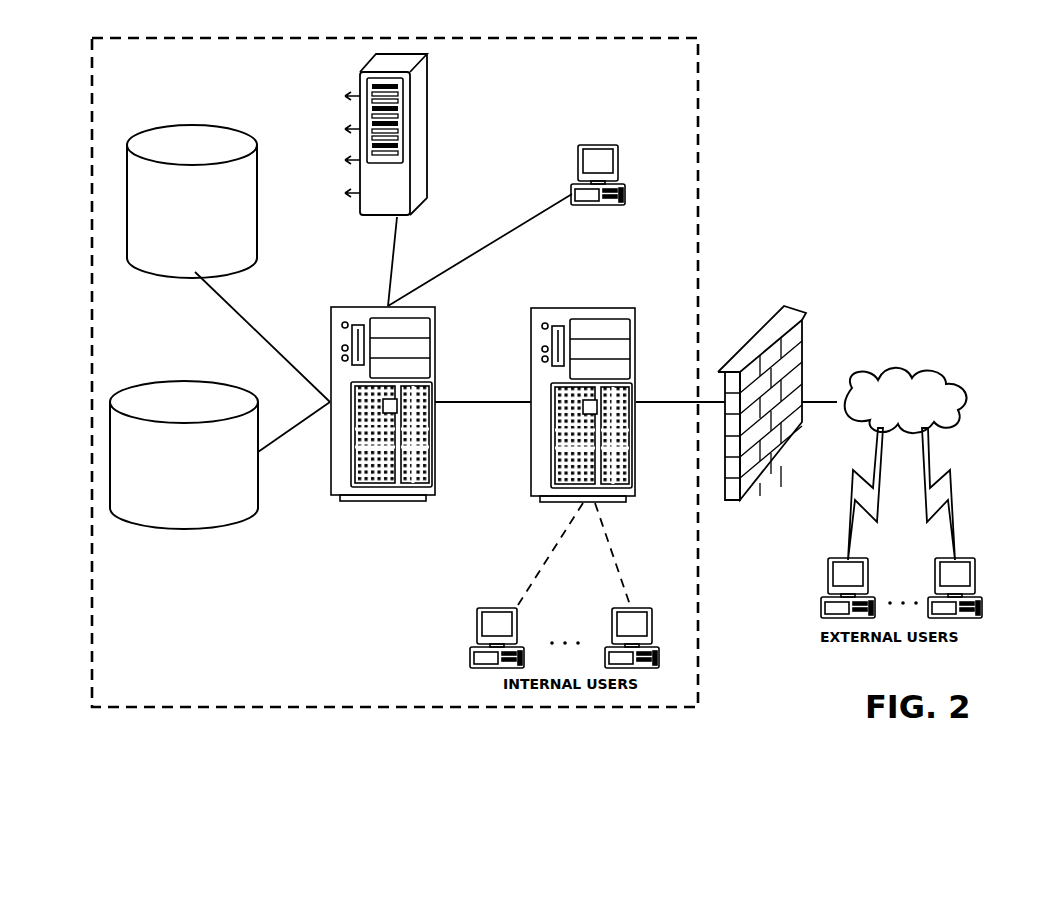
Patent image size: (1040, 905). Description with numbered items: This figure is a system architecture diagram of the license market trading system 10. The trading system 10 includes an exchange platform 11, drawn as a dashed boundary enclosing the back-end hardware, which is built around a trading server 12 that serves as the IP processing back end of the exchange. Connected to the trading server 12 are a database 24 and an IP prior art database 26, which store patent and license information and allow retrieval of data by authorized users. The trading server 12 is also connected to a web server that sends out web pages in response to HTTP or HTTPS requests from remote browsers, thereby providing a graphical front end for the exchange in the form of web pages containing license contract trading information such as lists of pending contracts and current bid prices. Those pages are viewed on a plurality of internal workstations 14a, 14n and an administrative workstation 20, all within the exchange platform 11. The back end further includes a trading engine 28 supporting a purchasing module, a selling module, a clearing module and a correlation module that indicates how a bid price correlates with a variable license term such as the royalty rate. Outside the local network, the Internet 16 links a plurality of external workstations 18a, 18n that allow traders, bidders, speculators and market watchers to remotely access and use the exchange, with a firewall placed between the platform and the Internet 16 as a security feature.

The trading system 10 is at (865, 203).
The exchange platform 11 is at (698, 80).
The trading server 12 is at (437, 338).
The workstation 14a is at (480, 610).
The workstation 14n is at (653, 610).
The Internet 16 is at (893, 370).
The external workstation 18a is at (828, 562).
The external workstation 18n is at (978, 558).
The administrative workstation 20 is at (608, 146).
The database 24 is at (192, 201).
The IP prior art database 26 is at (184, 455).
The trading engine 28 is at (420, 160).